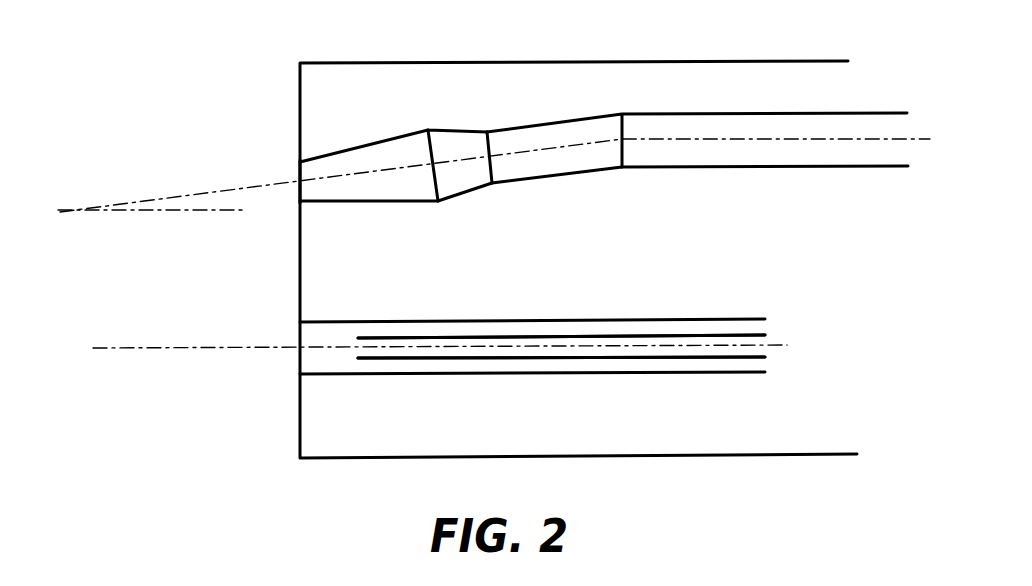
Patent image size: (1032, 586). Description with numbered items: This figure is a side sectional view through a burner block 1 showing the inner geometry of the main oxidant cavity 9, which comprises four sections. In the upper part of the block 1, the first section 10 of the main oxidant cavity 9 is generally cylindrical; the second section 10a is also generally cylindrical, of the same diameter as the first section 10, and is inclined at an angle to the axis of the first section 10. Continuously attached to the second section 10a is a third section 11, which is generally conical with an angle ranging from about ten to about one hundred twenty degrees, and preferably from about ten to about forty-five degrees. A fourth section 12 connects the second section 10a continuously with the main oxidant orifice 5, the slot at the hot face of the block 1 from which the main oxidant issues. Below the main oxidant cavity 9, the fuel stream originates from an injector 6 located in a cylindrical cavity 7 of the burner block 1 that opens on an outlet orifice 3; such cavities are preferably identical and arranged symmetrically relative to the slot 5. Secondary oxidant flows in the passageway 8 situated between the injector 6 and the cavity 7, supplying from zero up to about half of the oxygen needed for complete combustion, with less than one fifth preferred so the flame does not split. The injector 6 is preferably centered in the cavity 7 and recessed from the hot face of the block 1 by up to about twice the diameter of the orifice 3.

The burner block 1 is at (517, 82).
The outlet orifice 3 is at (300, 321).
The main oxidant orifice 5 is at (300, 166).
The injector 6 is at (515, 358).
The cylindrical cavity 7 is at (473, 321).
The passageway 8 is at (535, 330).
The main oxidant cavity 9 is at (448, 147).
The first section 10 is at (686, 113).
The second section 10a is at (578, 173).
The third section 11 is at (443, 130).
The fourth section 12 is at (356, 145).